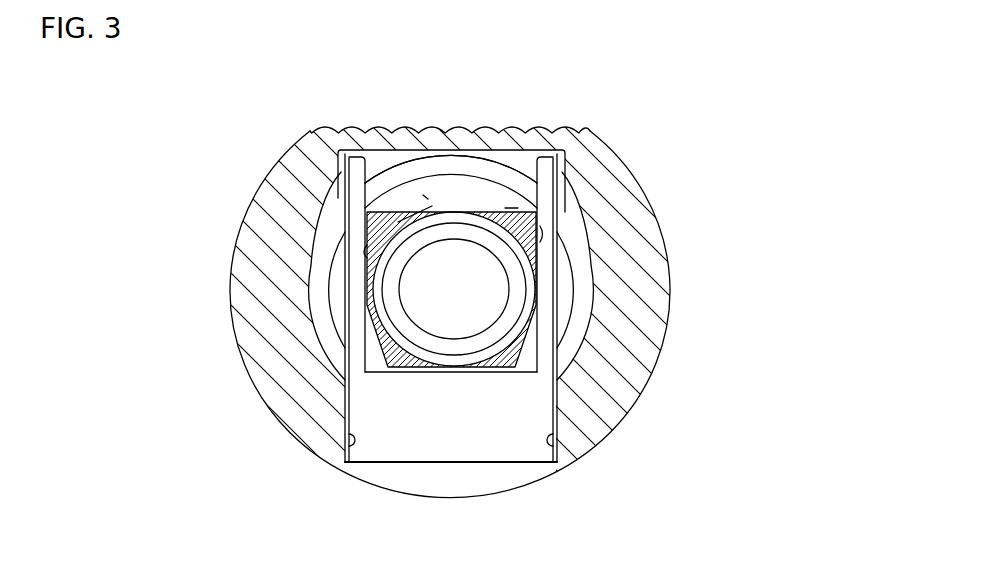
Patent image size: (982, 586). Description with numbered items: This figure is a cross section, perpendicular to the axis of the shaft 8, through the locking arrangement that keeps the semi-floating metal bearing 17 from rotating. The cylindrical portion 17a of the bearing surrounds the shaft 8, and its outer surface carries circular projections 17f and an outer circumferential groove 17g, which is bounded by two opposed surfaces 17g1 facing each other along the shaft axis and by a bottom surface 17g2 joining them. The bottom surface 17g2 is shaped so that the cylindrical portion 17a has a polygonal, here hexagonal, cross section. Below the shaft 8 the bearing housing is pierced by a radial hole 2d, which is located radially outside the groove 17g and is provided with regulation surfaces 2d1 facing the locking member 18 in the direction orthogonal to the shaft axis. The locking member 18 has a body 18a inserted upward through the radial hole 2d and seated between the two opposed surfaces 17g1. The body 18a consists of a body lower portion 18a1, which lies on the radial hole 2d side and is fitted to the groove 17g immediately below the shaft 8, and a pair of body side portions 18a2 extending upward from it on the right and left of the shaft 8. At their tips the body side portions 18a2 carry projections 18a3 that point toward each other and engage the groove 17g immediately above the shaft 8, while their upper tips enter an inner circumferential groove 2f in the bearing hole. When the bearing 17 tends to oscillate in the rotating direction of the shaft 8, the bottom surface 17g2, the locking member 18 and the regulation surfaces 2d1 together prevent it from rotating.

The locking member 18 is at (333, 149).
The body 18a is at (147, 268).
The body lower portion 18a1 is at (345, 417).
The body side portions 18a2 is at (344, 298).
The projections 18a3 is at (232, 274).
The radial hole 2d is at (451, 356).
The regulation surfaces 2d1 is at (345, 462).
The inner circumferential groove 2f is at (562, 163).
The semi-floating metal bearing 17 is at (393, 208).
The cylindrical portion 17a is at (383, 208).
The outer circumferential groove 17g is at (527, 72).
The opposed surfaces 17g1 is at (423, 195).
The bottom surface 17g2 is at (513, 208).
The circular projections 17f is at (432, 206).
The shaft 8 is at (425, 340).